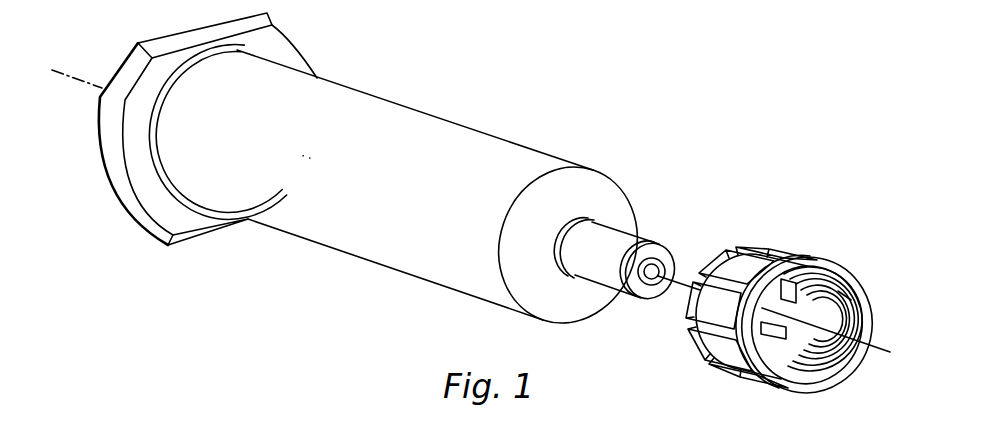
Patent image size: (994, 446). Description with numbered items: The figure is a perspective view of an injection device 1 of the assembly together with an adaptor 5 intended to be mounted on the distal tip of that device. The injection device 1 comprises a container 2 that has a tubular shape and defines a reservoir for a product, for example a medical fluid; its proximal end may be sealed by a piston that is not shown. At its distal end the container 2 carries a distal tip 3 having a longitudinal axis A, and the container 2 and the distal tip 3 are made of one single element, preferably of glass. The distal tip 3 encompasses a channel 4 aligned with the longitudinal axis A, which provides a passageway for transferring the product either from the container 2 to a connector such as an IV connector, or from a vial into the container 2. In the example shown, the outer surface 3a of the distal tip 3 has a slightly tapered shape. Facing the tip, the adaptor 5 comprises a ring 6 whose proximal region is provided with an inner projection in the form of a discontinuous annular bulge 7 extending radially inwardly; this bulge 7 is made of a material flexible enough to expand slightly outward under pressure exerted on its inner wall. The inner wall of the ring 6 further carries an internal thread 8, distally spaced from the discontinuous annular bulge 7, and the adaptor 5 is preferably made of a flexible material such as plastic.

The injection device 1 is at (417, 82).
The container 2 is at (488, 133).
The distal tip 3 is at (672, 233).
The outer surface 3a is at (602, 272).
The channel 4 is at (652, 277).
The adaptor 5 is at (843, 230).
The ring 6 is at (777, 257).
The discontinuous annular bulge 7 is at (760, 327).
The internal thread 8 is at (843, 297).
The longitudinal axis A is at (78, 80).